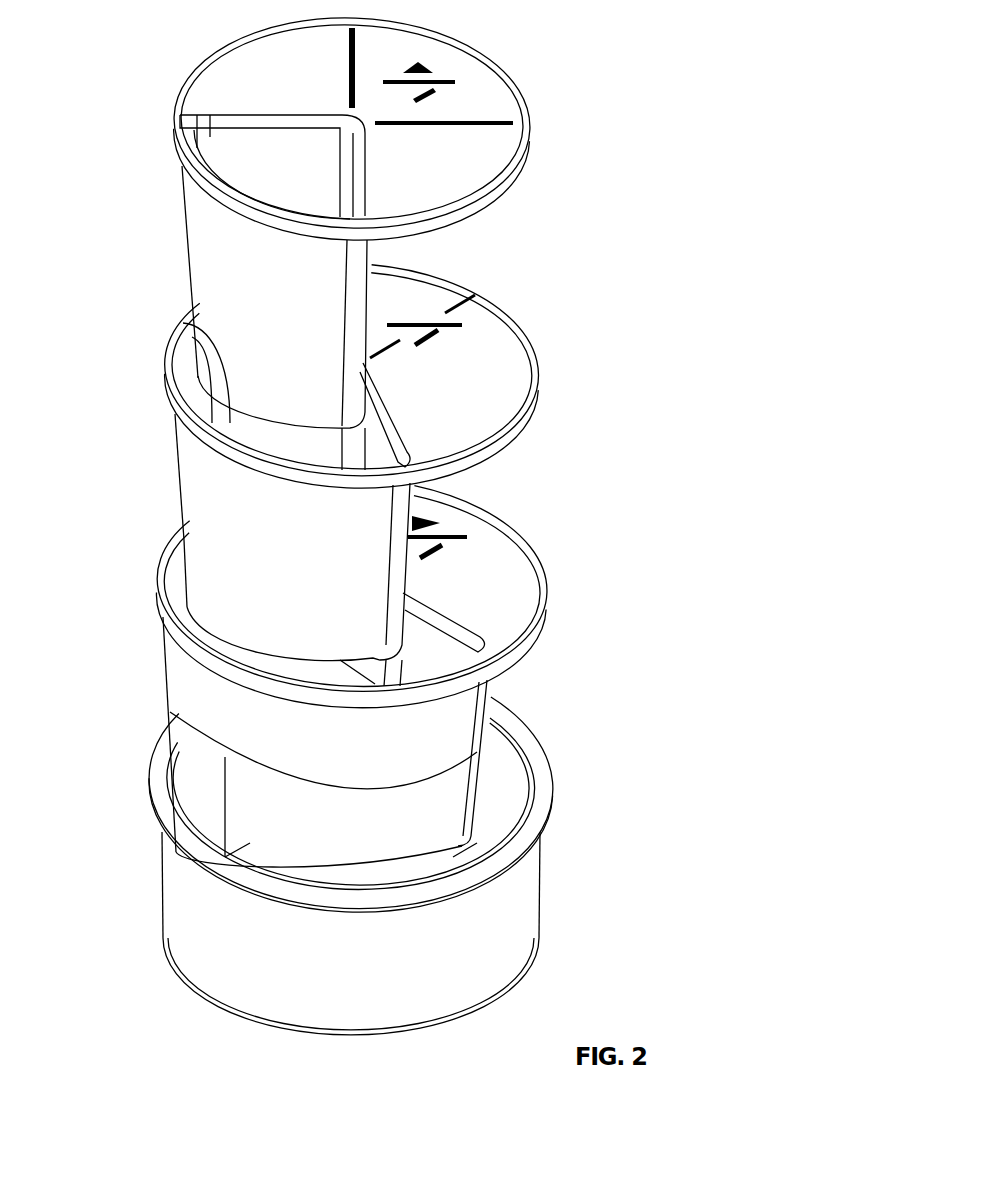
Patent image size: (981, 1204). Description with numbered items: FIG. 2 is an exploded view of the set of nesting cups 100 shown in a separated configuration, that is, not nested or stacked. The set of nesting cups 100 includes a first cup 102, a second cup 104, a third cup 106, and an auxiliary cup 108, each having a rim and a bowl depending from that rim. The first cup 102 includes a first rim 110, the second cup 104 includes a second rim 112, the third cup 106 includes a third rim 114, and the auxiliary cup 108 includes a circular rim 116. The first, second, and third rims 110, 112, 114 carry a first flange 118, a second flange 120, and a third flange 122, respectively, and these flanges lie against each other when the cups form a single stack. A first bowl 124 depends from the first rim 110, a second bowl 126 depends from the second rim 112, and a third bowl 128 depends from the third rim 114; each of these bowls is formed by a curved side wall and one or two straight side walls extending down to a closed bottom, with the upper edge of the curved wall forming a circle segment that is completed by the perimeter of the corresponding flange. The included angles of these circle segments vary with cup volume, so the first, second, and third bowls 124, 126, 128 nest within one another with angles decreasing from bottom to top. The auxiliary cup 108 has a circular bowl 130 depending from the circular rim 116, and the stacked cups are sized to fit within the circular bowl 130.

The set of nesting cups 100 is at (596, 34).
The first cup 102 is at (169, 692).
The second cup 104 is at (177, 470).
The third cup 106 is at (183, 232).
The auxiliary cup 108 is at (163, 906).
The first rim 110 is at (522, 638).
The second rim 112 is at (513, 422).
The third rim 114 is at (505, 182).
The circular rim 116 is at (552, 785).
The first flange 118 is at (518, 553).
The second flange 120 is at (507, 337).
The third flange 122 is at (498, 107).
The first bowl 124 is at (169, 564).
The second bowl 126 is at (197, 345).
The third bowl 128 is at (207, 132).
The circular bowl 130 is at (192, 790).